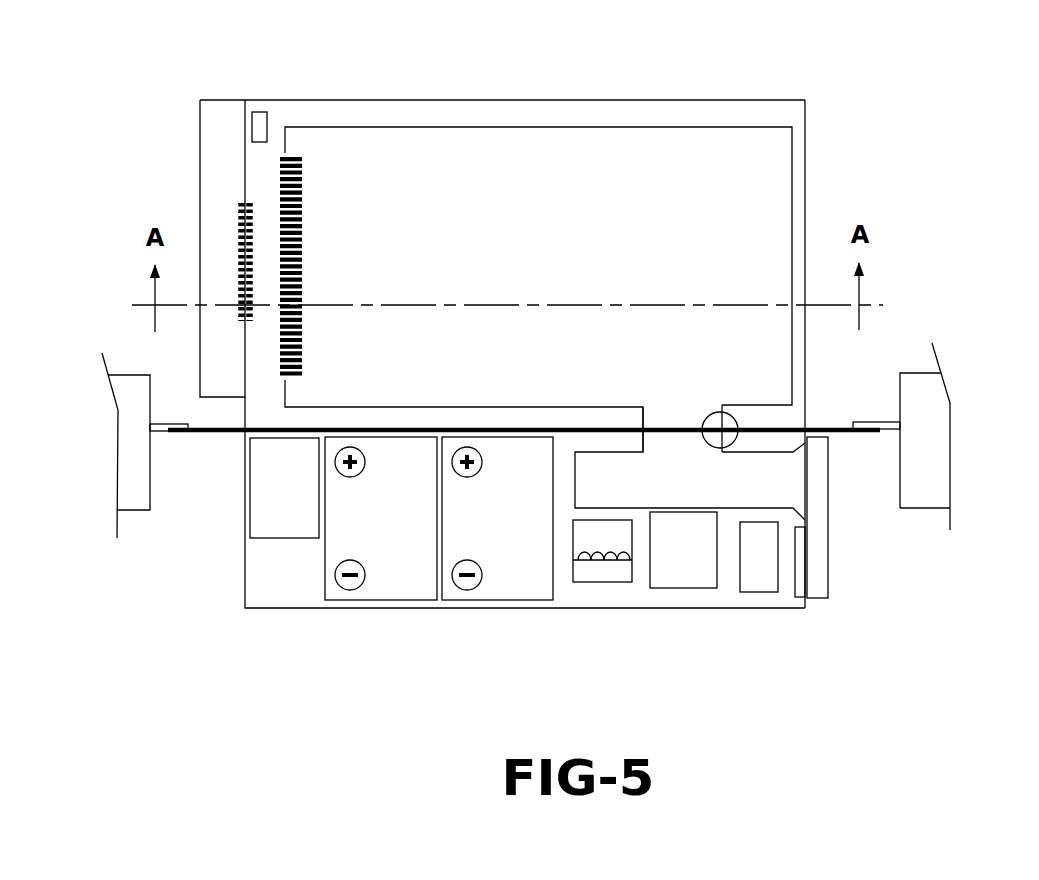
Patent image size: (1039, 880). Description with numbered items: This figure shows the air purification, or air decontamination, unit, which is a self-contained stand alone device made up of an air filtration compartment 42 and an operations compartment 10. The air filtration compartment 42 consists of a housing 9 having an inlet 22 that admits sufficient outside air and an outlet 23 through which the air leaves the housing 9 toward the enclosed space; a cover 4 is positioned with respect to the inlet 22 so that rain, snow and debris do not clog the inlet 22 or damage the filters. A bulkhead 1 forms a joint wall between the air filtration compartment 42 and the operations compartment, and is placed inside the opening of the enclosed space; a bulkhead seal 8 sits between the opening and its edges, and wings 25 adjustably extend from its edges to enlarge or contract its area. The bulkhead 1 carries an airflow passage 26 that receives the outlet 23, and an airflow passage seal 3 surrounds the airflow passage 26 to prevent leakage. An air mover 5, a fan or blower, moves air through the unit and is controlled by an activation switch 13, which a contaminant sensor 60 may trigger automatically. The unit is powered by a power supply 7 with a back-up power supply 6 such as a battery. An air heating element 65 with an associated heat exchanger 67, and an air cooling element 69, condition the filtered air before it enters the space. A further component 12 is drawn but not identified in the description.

The bulkhead 1 is at (862, 425).
The airflow passage seal 3 is at (731, 413).
The cover 4 is at (213, 231).
The air mover 5 is at (686, 571).
The back-up power supply 6 is at (518, 590).
The power supply 7 is at (266, 497).
The bulkhead seal 8 is at (900, 463).
The housing 9 is at (805, 212).
The operations compartment 10 is at (245, 588).
The bracket 12 is at (828, 532).
The activation switch 13 is at (798, 573).
The inlet 22 is at (232, 221).
The outlet 23 is at (677, 386).
The wings 25 is at (880, 426).
The airflow passage 26 is at (703, 402).
The air filtration compartment 42 is at (538, 97).
The contaminant sensor 60 is at (261, 109).
The air heating element 65 is at (613, 568).
The heat exchanger 67 is at (595, 585).
The air cooling element 69 is at (762, 591).